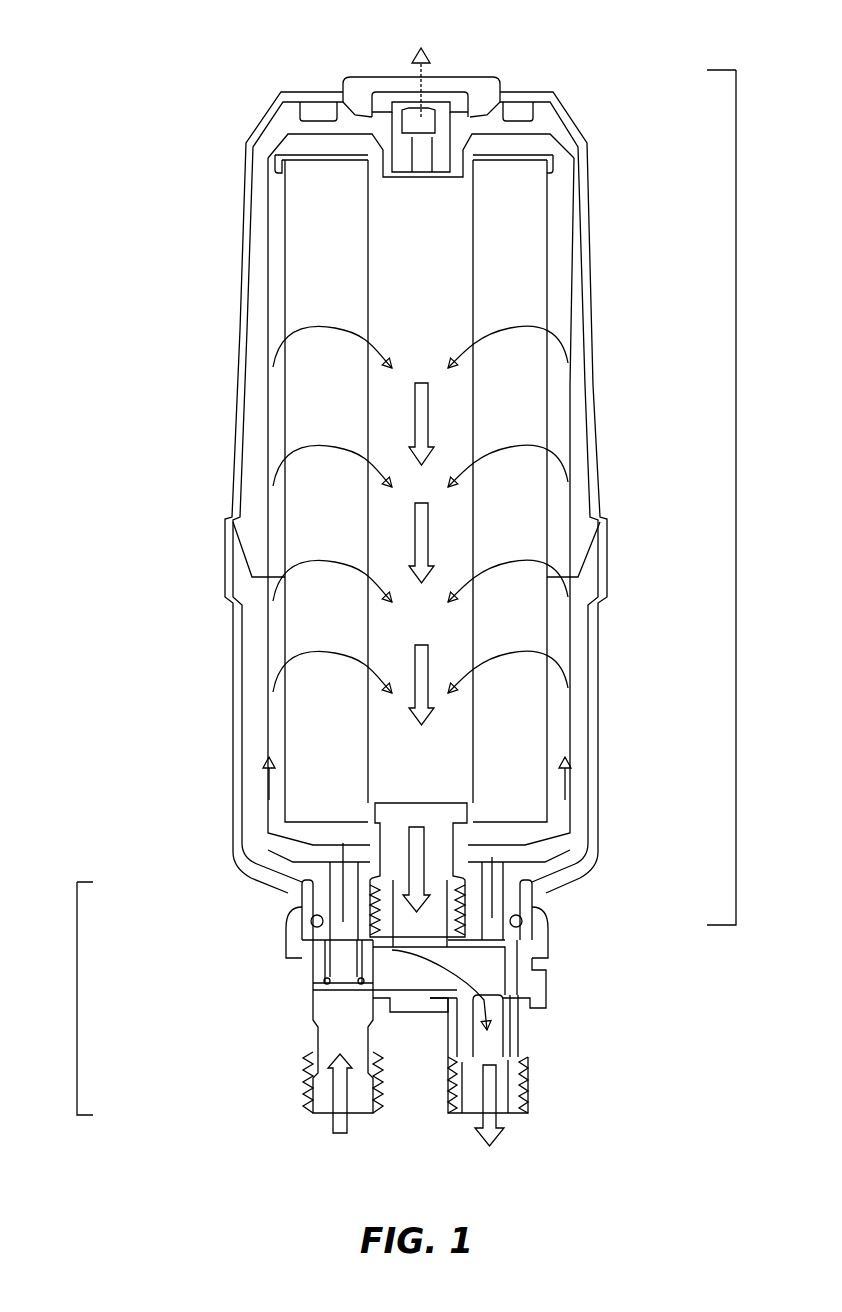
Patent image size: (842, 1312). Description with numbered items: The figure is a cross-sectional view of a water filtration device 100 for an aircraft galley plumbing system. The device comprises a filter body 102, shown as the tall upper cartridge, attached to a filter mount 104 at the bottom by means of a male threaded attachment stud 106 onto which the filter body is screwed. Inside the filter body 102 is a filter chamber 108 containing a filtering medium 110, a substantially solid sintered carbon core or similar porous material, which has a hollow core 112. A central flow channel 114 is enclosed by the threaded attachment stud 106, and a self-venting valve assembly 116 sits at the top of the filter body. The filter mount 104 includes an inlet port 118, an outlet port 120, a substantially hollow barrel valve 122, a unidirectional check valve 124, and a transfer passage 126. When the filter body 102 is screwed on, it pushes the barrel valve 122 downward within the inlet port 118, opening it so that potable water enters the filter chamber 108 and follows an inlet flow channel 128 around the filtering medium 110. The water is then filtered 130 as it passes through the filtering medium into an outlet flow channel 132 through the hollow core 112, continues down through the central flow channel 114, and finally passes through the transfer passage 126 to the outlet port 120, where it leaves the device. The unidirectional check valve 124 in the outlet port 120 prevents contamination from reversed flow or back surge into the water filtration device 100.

The water filtration device 100 is at (80, 52).
The filter body 102 is at (742, 472).
The filter mount 104 is at (77, 1017).
The threaded attachment stud 106 is at (452, 925).
The filter chamber 108 is at (272, 237).
The filtering medium 110 is at (322, 410).
The hollow core 112 is at (437, 280).
The central flow channel 114 is at (413, 853).
The self-venting valve assembly 116 is at (347, 56).
The inlet port 118 is at (316, 1040).
The outlet port 120 is at (513, 1067).
The barrel valve 122 is at (340, 970).
The unidirectional check valve 124 is at (480, 1040).
The transfer passage 126 is at (433, 970).
The inlet flow channel 128 is at (272, 793).
The filtered potable water flow 130 is at (312, 338).
The outlet flow channel 132 is at (428, 415).